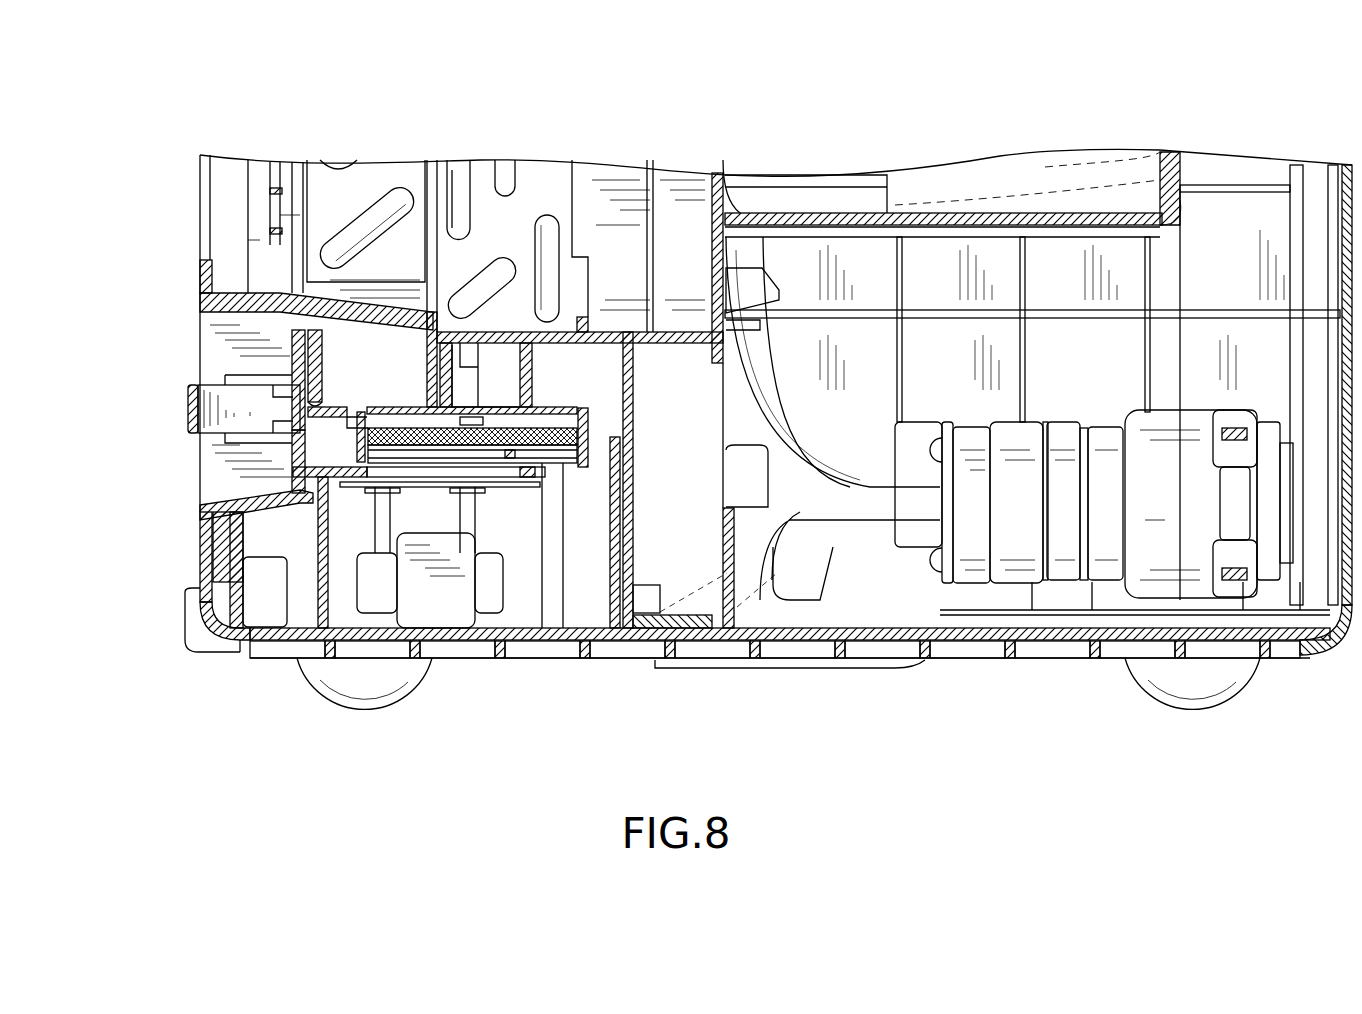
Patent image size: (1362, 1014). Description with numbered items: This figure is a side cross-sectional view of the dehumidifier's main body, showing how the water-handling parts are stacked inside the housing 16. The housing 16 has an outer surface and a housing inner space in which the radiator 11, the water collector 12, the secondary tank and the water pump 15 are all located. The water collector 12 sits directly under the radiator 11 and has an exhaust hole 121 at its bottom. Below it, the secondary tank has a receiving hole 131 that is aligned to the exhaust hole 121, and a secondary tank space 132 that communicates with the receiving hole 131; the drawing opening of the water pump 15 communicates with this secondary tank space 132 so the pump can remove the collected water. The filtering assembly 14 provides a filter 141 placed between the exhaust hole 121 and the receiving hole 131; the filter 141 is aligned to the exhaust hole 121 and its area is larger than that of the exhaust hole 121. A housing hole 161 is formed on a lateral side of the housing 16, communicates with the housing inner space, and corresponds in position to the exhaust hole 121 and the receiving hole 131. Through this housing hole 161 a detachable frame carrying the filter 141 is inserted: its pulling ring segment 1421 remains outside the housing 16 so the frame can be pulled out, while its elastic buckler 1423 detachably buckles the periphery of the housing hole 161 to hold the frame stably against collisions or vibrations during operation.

The radiator 11 is at (528, 165).
The water collector 12 is at (586, 318).
The exhaust hole 121 is at (505, 400).
The receiving hole 131 is at (515, 473).
The secondary tank space 132 is at (532, 537).
The filtering assembly 14 is at (190, 432).
The pulling ring segment 1421 is at (188, 410).
The elastic buckler 1423 is at (300, 465).
The filter 141 is at (555, 443).
The water pump 15 is at (1050, 410).
The housing 16 is at (200, 310).
The housing hole 161 is at (297, 428).